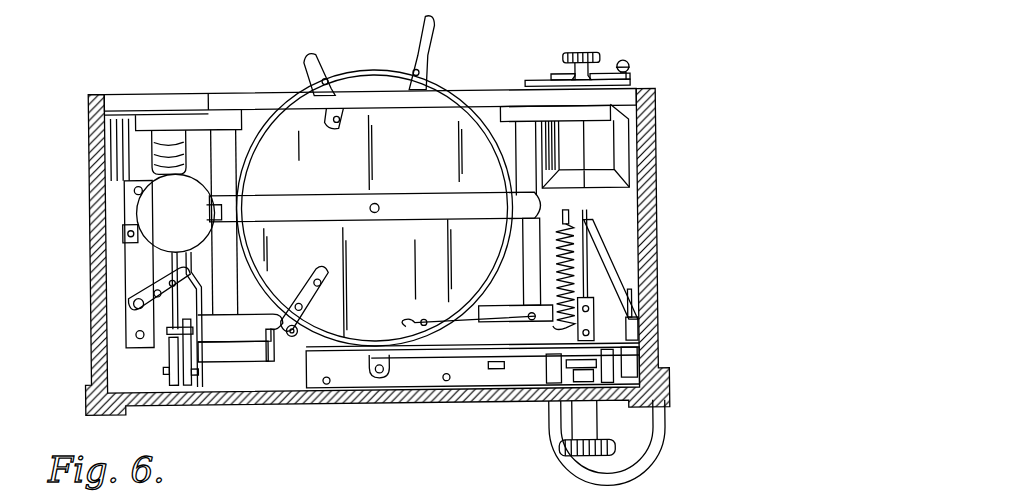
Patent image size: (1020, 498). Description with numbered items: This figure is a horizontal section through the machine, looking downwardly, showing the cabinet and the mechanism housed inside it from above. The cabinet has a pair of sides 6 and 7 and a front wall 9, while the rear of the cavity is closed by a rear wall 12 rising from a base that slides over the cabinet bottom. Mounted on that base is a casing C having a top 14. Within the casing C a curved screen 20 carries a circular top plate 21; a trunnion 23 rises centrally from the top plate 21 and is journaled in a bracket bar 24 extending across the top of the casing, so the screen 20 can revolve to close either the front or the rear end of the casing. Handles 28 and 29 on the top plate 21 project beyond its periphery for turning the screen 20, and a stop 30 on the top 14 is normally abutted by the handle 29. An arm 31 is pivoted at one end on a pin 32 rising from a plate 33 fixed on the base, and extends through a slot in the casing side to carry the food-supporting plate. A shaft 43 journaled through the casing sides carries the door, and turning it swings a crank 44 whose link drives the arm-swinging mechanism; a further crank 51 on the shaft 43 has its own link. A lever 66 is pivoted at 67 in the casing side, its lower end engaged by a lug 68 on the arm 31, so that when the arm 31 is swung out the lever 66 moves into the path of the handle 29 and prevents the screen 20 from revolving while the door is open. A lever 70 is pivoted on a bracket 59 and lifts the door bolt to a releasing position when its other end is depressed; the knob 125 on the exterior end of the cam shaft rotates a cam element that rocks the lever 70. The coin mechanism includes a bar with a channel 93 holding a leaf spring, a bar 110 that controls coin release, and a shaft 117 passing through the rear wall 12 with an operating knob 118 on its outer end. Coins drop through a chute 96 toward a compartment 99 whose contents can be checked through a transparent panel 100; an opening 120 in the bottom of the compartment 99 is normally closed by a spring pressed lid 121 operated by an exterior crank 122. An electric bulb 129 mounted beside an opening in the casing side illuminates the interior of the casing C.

The cabinet side 6 is at (97, 231).
The cabinet side 7 is at (650, 214).
The front wall 9 is at (447, 392).
The rear wall 12 is at (227, 91).
The casing C is at (253, 127).
The casing top 14 is at (257, 373).
The curved screen 20 is at (353, 72).
The circular top plate 21 is at (374, 207).
The trunnion 23 is at (379, 205).
The bracket bar 24 is at (299, 208).
The handle 28 is at (318, 56).
The handle 29 is at (308, 292).
The stop 30 is at (292, 342).
The arm 31 is at (185, 270).
The pin 32 is at (118, 338).
The plate 33 is at (162, 262).
The shaft 43 is at (187, 372).
The crank 44 is at (177, 372).
The crank 51 is at (197, 367).
The bracket 59 is at (420, 352).
The lever 66 is at (232, 350).
The pivot 67 is at (177, 323).
The lug 68 is at (126, 300).
The lever 70 is at (477, 362).
The channel 93 is at (598, 256).
The chute 96 is at (643, 469).
The compartment 99 is at (632, 142).
The transparent panel 100 is at (528, 82).
The bar 110 is at (594, 324).
The shaft 117 is at (592, 272).
The operating knob 118 is at (588, 54).
The opening 120 is at (615, 158).
The spring pressed lid 121 is at (596, 147).
The crank 122 is at (609, 70).
The knob 125 is at (585, 430).
The electric bulb 129 is at (172, 239).